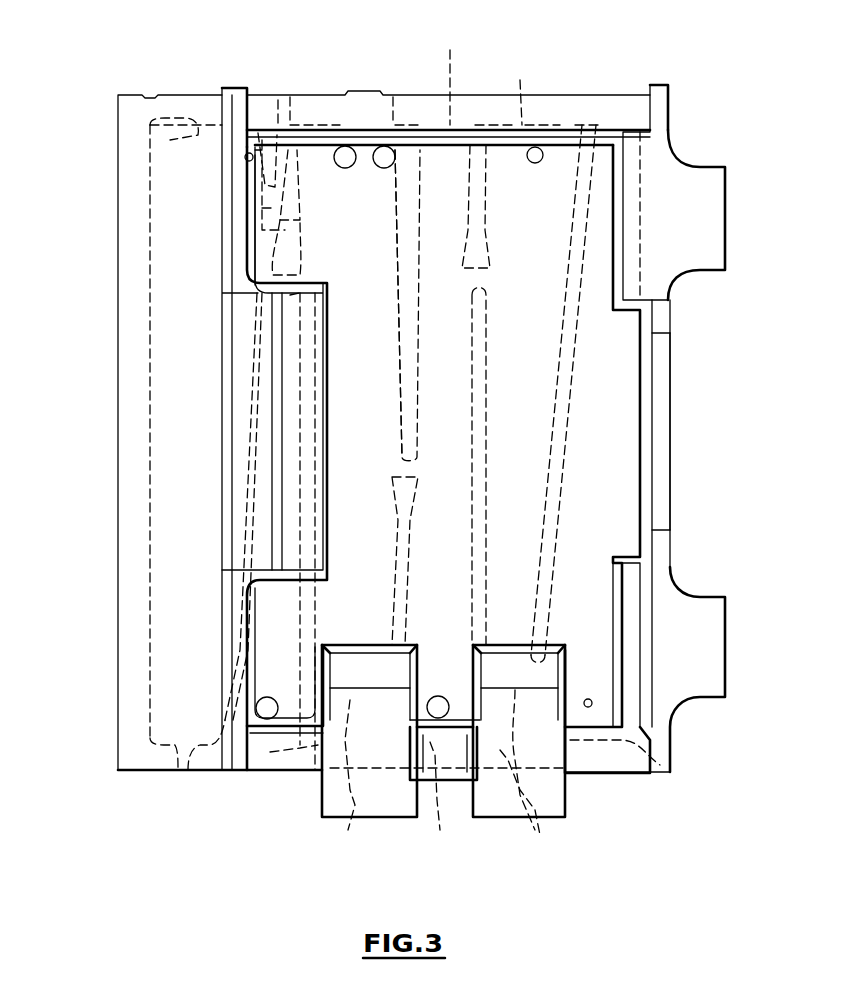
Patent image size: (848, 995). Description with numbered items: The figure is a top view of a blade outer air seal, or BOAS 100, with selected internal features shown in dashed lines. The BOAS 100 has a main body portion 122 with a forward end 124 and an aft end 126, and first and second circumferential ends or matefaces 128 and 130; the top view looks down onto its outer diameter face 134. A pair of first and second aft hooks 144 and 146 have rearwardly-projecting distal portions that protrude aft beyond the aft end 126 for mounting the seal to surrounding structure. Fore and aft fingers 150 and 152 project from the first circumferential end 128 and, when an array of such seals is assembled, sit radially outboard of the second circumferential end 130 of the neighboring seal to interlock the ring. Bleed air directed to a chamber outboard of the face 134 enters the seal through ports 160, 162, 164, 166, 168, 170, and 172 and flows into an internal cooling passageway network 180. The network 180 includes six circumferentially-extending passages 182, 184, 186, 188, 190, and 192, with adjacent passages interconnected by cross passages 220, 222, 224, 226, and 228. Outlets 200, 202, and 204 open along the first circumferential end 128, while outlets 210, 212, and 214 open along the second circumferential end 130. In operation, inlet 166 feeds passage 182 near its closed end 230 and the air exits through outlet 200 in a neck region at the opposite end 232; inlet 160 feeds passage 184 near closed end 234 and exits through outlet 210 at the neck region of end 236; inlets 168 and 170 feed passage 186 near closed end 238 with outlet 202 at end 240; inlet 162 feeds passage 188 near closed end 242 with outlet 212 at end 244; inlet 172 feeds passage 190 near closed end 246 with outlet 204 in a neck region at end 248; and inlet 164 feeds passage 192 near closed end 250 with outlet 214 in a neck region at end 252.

The blade outer air seal (BOAS) 100 is at (710, 408).
The main body portion 122 is at (618, 503).
The leading/upstream/forward end 124 is at (104, 483).
The trailing/downstream/aft end 126 is at (672, 380).
The first circumferential end 128 is at (636, 788).
The second circumferential end 130 is at (489, 95).
The outer diameter face 134 is at (620, 462).
The first aft hook 144 is at (693, 615).
The second aft hook 146 is at (693, 190).
The fore finger 150 is at (352, 788).
The aft finger 152 is at (512, 808).
The port (inlet) 160 is at (260, 708).
The port (inlet) 162 is at (440, 698).
The port (inlet) 164 is at (592, 702).
The port (inlet) 166 is at (245, 157).
The port (inlet) 168 is at (345, 146).
The port (inlet) 170 is at (384, 146).
The port (inlet) 172 is at (543, 153).
The internal cooling passageway network 180 is at (438, 510).
The circumferentially-extending passage 182 is at (175, 410).
The circumferentially-extending passage 184 is at (275, 255).
The circumferentially-extending passage 186 is at (258, 250).
The circumferentially-extending passage 188 is at (455, 225).
The circumferentially-extending passage 190 is at (545, 370).
The circumferentially-extending passage 192 is at (615, 535).
The outlet 200 is at (183, 772).
The outlet 202 is at (330, 768).
The outlet 204 is at (497, 760).
The outlet 210 is at (285, 130).
The outlet 212 is at (450, 50).
The outlet 214 is at (640, 100).
The cross passage 220 is at (285, 195).
The cross passage 222 is at (310, 278).
The cross passage 224 is at (400, 462).
The cross passage 226 is at (480, 297).
The cross passage 228 is at (540, 650).
The closed end 230 is at (150, 125).
The opposite end 232 is at (165, 735).
The closed end 234 is at (272, 752).
The other end 236 is at (292, 108).
The closed end 238 is at (393, 97).
The other end 240 is at (362, 788).
The closed end 242 is at (437, 800).
The other end 244 is at (468, 105).
The closed end 246 is at (520, 90).
The other end 248 is at (530, 828).
The closed end 250 is at (655, 763).
The other end 252 is at (635, 110).